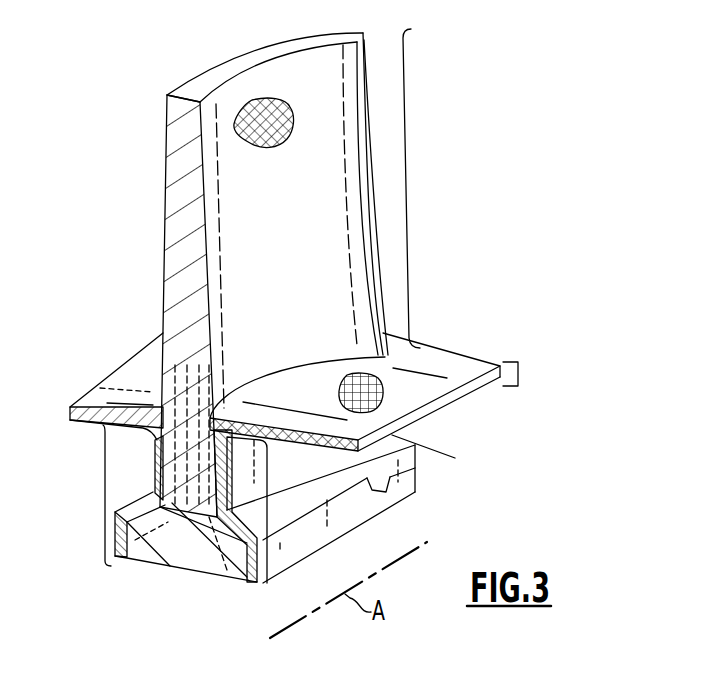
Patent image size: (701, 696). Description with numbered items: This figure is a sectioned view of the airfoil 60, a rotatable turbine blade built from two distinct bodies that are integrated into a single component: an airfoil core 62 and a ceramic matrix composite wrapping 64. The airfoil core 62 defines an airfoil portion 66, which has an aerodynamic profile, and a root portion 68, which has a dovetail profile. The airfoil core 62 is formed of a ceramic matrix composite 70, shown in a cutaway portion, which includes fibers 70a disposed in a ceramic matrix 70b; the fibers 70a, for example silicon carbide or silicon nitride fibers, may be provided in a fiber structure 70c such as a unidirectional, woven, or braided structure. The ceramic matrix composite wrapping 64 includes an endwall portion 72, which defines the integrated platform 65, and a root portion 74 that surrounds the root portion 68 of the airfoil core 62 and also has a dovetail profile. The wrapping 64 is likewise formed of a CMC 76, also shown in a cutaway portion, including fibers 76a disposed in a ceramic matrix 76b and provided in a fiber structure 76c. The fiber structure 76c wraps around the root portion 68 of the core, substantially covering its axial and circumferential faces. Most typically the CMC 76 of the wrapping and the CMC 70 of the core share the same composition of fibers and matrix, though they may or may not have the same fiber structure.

The airfoil 60 is at (490, 154).
The airfoil core 62 is at (150, 356).
The ceramic matrix composite wrapping 64 is at (82, 388).
The platform 65 is at (518, 374).
The airfoil portion 66 is at (408, 212).
The root portion 68 is at (105, 481).
The ceramic matrix composite 70 is at (292, 139).
The fibers 70a is at (285, 137).
The ceramic matrix 70b is at (254, 146).
The fiber structure 70c is at (167, 560).
The endwall portion 72 is at (456, 458).
The root portion 74 is at (268, 503).
The ceramic matrix composite 76 is at (385, 387).
The fibers 76a is at (381, 401).
The ceramic matrix 76b is at (460, 354).
The fiber structure 76c is at (255, 420).